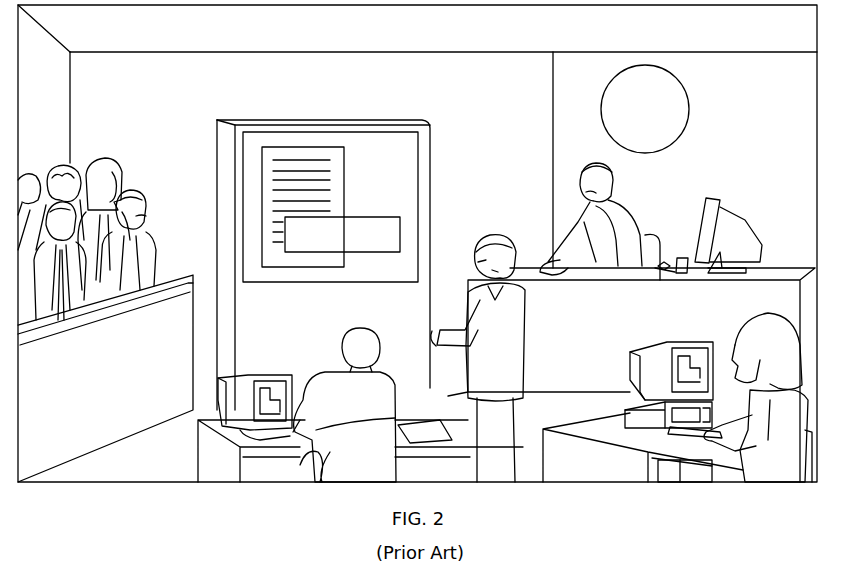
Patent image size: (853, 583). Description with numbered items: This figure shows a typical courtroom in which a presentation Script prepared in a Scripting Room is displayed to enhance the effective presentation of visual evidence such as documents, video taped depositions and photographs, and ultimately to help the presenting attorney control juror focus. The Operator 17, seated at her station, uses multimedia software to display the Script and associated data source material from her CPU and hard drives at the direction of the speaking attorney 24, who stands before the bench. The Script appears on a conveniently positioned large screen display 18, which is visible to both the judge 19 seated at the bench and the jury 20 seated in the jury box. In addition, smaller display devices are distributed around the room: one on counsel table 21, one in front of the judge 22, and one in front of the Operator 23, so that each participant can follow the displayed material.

The Operator 17 is at (750, 318).
The large screen display 18 is at (255, 152).
The judge 19 is at (612, 168).
The jury 20 is at (107, 157).
The display device on counsel table 21 is at (277, 372).
The display device in front of the judge 22 is at (735, 212).
The display device in front of the Operator 23 is at (657, 347).
The speaking attorney 24 is at (497, 233).